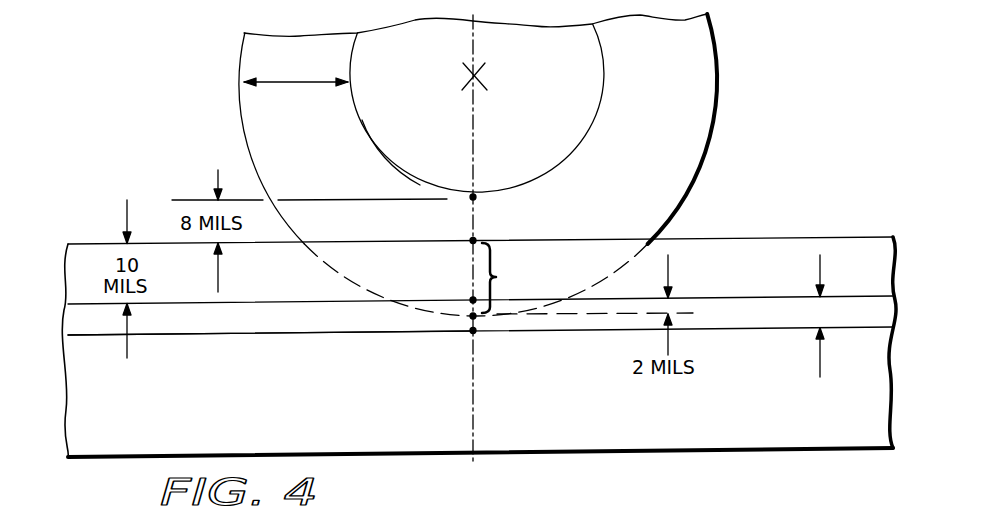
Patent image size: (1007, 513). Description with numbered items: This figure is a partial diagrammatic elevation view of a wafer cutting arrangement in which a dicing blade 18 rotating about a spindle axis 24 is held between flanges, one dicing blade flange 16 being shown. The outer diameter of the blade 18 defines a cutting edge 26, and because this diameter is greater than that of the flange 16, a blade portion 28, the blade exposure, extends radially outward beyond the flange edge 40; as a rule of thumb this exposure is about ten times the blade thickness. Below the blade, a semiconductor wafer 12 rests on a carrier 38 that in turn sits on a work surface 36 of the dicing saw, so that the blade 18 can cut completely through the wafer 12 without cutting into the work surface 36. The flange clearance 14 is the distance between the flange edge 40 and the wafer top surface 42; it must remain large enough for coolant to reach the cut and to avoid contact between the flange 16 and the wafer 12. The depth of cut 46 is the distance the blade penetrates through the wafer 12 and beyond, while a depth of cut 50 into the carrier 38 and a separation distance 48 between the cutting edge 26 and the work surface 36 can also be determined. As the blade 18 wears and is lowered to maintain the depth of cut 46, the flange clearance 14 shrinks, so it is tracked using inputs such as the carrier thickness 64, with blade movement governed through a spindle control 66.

The semiconductor wafer 12 is at (893, 270).
The flange clearance 14 is at (477, 202).
The dicing blade flange 16 is at (601, 72).
The dicing blade 18 is at (688, 70).
The spindle axis 24 is at (483, 70).
The cutting edge 26 is at (248, 160).
The blade portion 28 is at (280, 82).
The work surface 36 is at (303, 331).
The carrier 38 is at (879, 310).
The flange edge 40 is at (390, 156).
The wafer top surface 42 is at (747, 237).
The depth of cut 46 is at (497, 277).
The separation distance 48 is at (470, 318).
The depth of cut into the carrier 50 is at (472, 308).
The carrier thickness 64 is at (822, 352).
The spindle control 66 is at (809, 505).